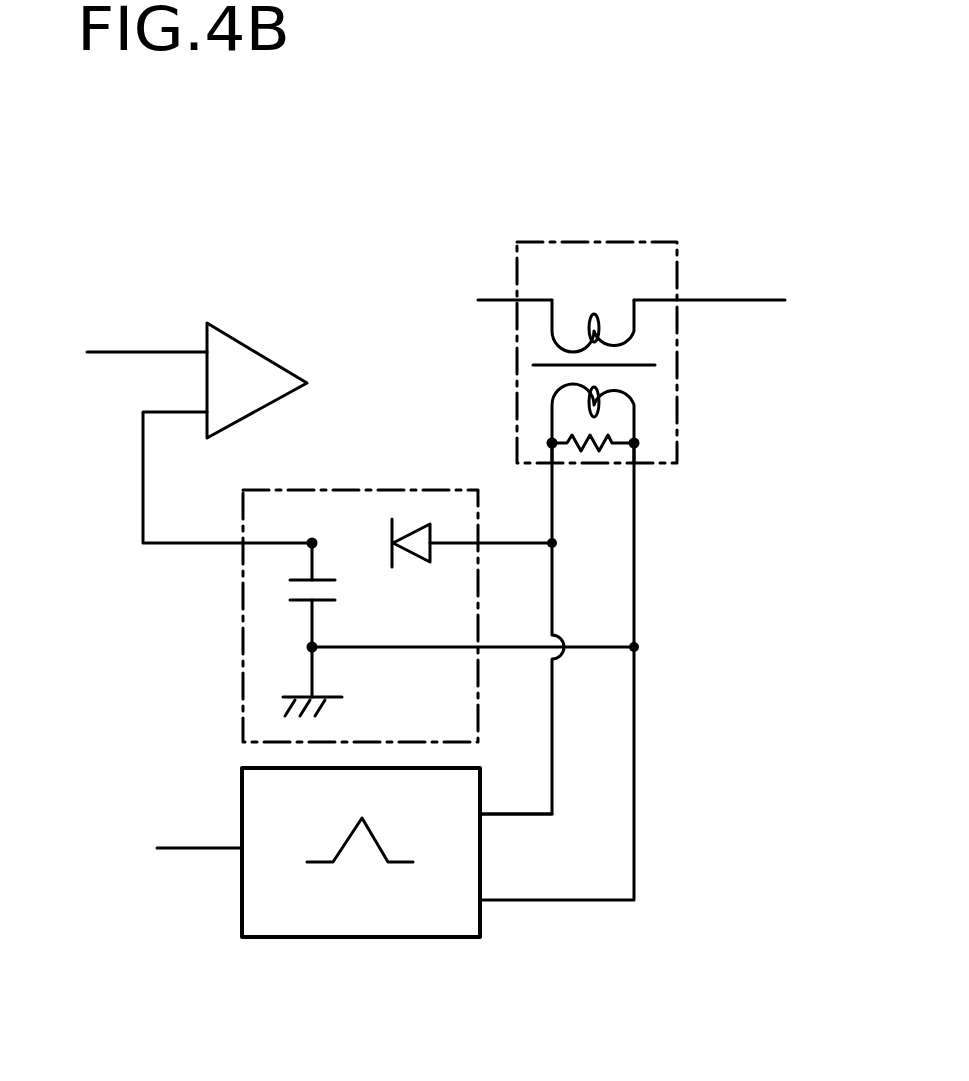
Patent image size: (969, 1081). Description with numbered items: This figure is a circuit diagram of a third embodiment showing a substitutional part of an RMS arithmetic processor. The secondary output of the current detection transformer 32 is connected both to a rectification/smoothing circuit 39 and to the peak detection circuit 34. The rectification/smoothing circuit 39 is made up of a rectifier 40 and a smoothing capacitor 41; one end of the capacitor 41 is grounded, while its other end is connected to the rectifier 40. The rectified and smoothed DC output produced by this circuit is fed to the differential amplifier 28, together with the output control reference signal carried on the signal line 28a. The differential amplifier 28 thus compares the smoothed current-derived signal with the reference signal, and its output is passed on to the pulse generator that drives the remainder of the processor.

The signal line 28a is at (112, 352).
The differential amplifier 28 is at (252, 347).
The current detection transformer 32 is at (677, 378).
The peak detection circuit 34 is at (323, 927).
The rectification/smoothing circuit 39 is at (242, 710).
The rectifier 40 is at (422, 524).
The smoothing capacitor 41 is at (292, 580).